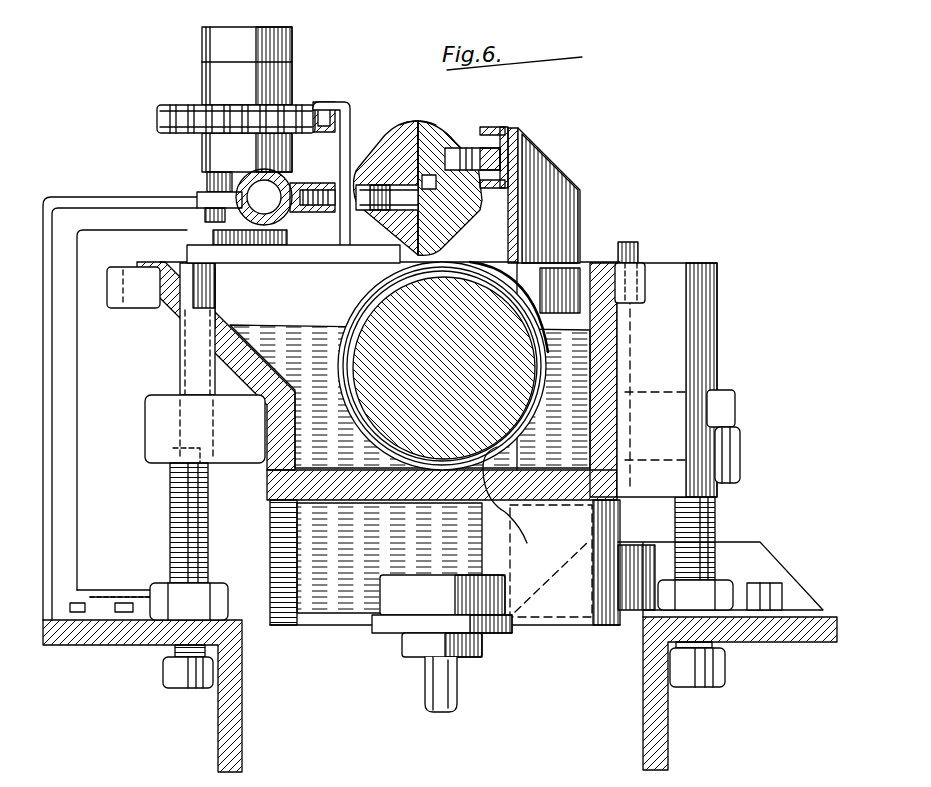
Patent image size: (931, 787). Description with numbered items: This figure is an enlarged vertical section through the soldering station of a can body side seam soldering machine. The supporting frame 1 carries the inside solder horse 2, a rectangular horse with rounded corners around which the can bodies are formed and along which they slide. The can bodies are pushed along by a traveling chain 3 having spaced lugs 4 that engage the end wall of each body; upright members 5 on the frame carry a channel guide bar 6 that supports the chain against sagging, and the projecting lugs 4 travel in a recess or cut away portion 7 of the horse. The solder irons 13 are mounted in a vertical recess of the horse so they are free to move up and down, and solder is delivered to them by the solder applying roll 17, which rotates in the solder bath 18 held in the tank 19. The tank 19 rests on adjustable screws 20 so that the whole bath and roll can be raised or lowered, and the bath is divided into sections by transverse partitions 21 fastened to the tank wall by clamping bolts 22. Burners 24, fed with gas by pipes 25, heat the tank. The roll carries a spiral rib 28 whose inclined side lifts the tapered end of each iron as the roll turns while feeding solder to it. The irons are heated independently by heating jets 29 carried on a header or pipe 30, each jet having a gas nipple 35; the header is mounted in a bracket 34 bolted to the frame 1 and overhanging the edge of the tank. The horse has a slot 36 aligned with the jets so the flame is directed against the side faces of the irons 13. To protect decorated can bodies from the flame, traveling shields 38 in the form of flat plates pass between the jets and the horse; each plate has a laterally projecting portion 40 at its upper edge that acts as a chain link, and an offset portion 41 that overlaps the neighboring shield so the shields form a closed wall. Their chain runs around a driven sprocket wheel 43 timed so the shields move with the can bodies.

The supporting frame 1 is at (126, 642).
The inside solder horse 2 is at (393, 150).
The traveling chain 3 is at (515, 142).
The lugs 4 is at (472, 160).
The upright members 5 is at (552, 180).
The channel guide bar 6 is at (492, 128).
The recess or cut away portion 7 is at (417, 128).
The solder irons 13 is at (428, 180).
The solder applying roll 17 is at (500, 312).
The solder bath 18 is at (618, 350).
The tank 19 is at (630, 380).
The adjustable screws 20 is at (172, 514).
The transverse partitions 21 is at (518, 292).
The clamping bolts 22 is at (640, 253).
The burners 24 is at (418, 597).
The pipes 25 is at (452, 678).
The spiral rib 28 is at (527, 543).
The heating jets 29 is at (303, 190).
The header or pipe 30 is at (232, 176).
The bracket 34 is at (108, 189).
The gas nipple 35 is at (310, 212).
The slot 36 is at (398, 200).
The traveling shields 38 is at (347, 122).
The laterally projecting portion 40 is at (321, 102).
The offset portion 41 is at (290, 252).
The sprocket wheel 43 is at (185, 112).